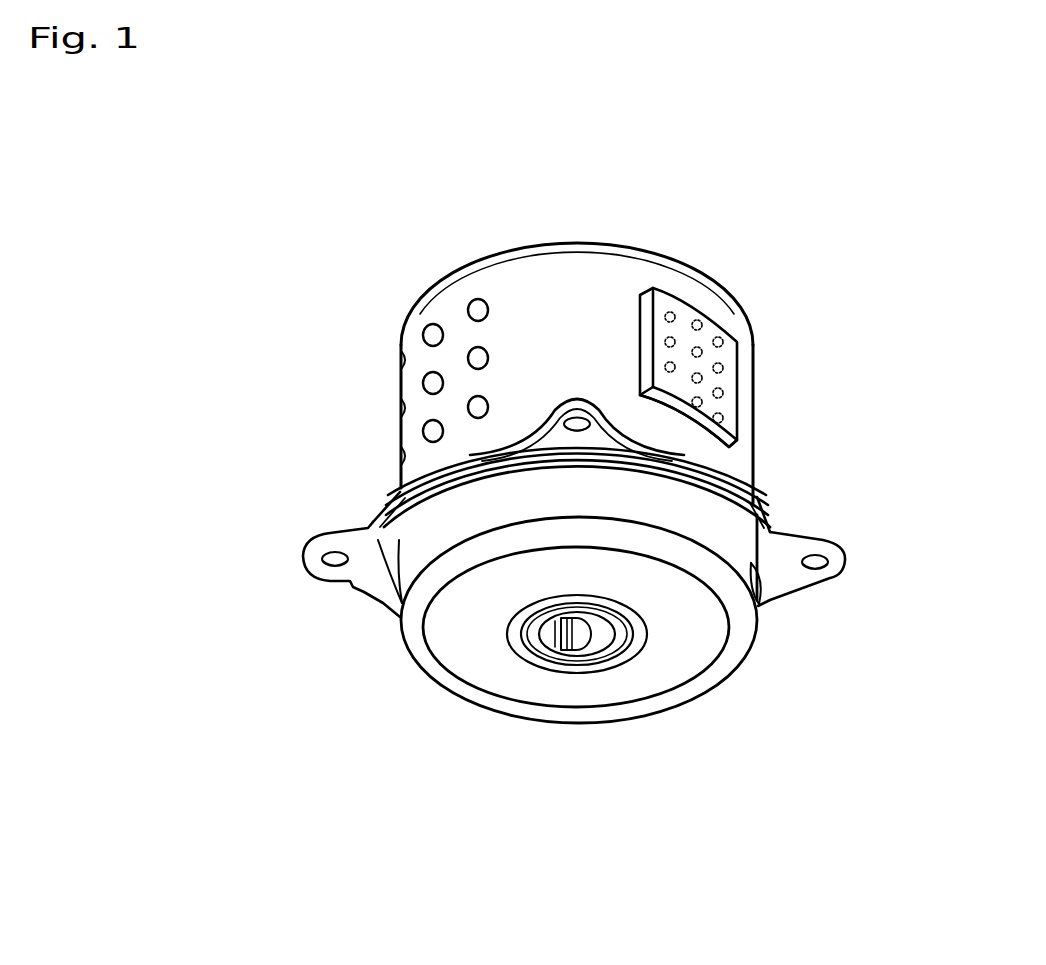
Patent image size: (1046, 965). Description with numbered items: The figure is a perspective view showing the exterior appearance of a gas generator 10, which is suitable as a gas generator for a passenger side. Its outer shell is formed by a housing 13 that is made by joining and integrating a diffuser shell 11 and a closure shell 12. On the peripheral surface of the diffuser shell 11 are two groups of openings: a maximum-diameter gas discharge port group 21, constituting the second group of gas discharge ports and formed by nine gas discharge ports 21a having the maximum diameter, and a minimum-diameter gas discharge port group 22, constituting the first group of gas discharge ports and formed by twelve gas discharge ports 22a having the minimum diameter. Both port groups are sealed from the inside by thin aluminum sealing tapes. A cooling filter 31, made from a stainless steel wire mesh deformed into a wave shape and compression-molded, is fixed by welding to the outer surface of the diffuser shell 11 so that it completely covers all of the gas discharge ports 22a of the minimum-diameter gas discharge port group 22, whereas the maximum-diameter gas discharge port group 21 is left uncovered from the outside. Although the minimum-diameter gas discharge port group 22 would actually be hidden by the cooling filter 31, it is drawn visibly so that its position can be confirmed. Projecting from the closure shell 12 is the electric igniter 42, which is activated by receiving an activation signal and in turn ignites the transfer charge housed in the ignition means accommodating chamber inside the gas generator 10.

The gas generator 10 is at (608, 219).
The diffuser shell 11 is at (400, 446).
The closure shell 12 is at (398, 638).
The housing 13 is at (213, 491).
The maximum-diameter gas discharge port group 21 is at (467, 299).
The gas discharge ports 21a is at (428, 333).
The minimum-diameter gas discharge port group 22 is at (697, 324).
The gas discharge ports 22a is at (718, 368).
The cooling filter 31 is at (729, 418).
The electric igniter 42 is at (575, 640).